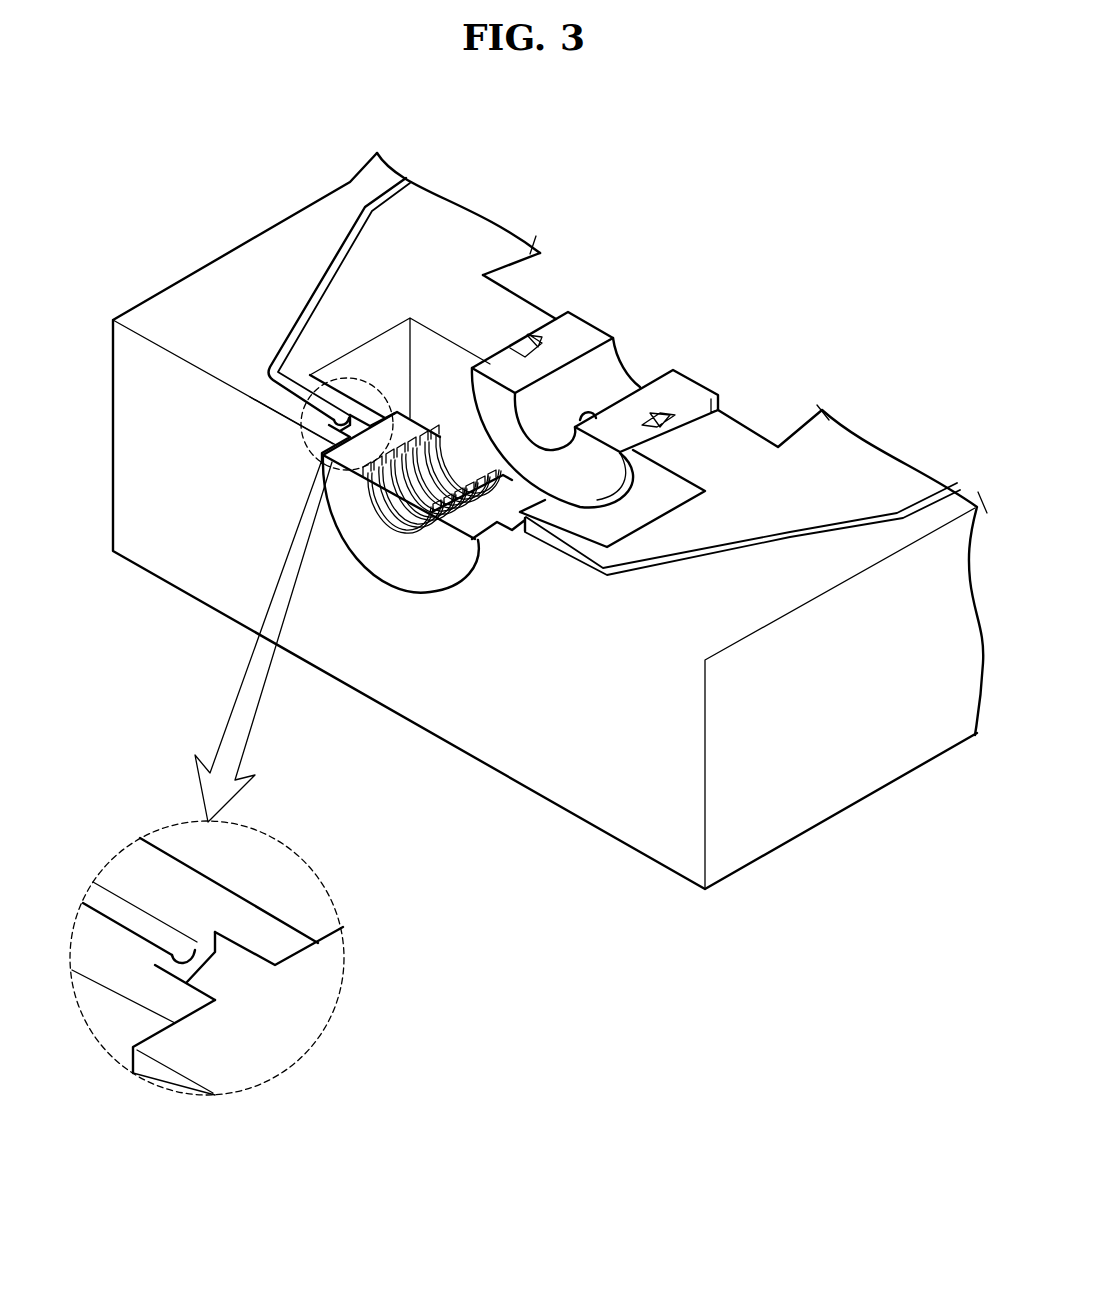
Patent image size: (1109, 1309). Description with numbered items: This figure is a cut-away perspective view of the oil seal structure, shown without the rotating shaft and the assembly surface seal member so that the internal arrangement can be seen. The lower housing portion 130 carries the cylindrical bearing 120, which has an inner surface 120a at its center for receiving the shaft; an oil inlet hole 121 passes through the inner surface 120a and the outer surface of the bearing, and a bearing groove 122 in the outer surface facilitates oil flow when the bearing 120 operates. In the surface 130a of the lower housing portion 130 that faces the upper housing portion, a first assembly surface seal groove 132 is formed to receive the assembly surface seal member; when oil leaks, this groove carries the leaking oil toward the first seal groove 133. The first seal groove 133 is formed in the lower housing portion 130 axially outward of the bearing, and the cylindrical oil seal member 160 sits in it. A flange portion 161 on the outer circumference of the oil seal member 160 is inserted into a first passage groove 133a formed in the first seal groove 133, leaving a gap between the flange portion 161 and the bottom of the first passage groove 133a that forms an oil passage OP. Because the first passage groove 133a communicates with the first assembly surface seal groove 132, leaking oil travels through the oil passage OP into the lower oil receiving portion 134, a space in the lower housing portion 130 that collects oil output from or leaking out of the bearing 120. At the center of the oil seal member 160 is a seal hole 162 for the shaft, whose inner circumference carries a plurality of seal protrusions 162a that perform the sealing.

The lower housing portion 130 is at (203, 232).
The surface 130a is at (425, 222).
The first assembly surface seal groove 132 is at (330, 258).
The lower oil receiving portion 134 is at (448, 350).
The bearing 120 is at (588, 332).
The inner surface 120a is at (615, 370).
The oil inlet hole 121 is at (605, 410).
The bearing groove 122 is at (537, 343).
The oil seal member 160 is at (427, 577).
The seal hole 162 is at (400, 520).
The seal protrusions 162a is at (425, 513).
The flange portion 161 is at (237, 968).
The first seal groove 133 is at (177, 1027).
The first passage groove 133a is at (170, 972).
The oil passage OP is at (212, 955).